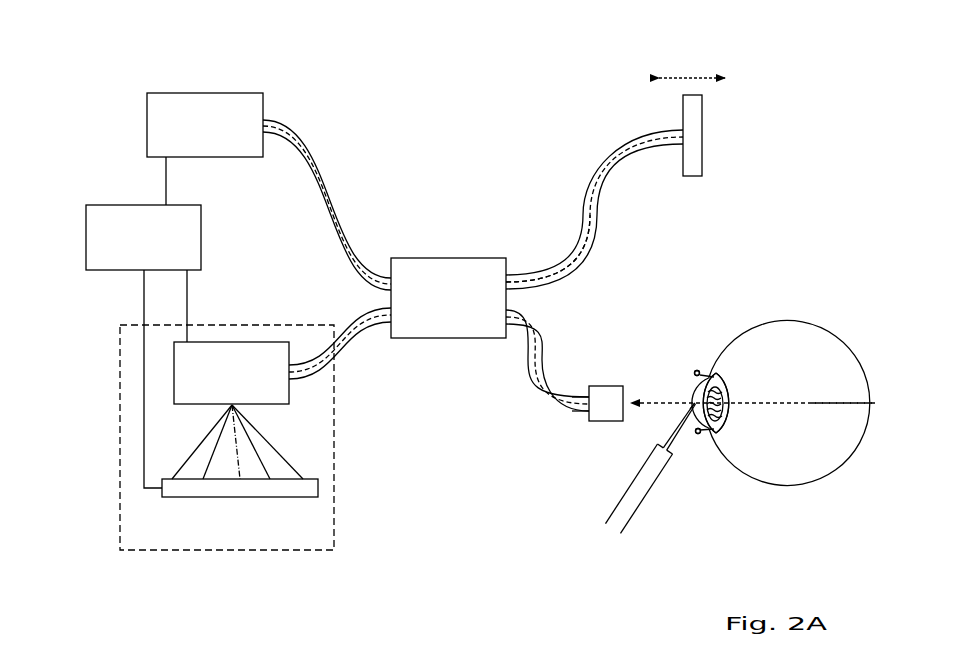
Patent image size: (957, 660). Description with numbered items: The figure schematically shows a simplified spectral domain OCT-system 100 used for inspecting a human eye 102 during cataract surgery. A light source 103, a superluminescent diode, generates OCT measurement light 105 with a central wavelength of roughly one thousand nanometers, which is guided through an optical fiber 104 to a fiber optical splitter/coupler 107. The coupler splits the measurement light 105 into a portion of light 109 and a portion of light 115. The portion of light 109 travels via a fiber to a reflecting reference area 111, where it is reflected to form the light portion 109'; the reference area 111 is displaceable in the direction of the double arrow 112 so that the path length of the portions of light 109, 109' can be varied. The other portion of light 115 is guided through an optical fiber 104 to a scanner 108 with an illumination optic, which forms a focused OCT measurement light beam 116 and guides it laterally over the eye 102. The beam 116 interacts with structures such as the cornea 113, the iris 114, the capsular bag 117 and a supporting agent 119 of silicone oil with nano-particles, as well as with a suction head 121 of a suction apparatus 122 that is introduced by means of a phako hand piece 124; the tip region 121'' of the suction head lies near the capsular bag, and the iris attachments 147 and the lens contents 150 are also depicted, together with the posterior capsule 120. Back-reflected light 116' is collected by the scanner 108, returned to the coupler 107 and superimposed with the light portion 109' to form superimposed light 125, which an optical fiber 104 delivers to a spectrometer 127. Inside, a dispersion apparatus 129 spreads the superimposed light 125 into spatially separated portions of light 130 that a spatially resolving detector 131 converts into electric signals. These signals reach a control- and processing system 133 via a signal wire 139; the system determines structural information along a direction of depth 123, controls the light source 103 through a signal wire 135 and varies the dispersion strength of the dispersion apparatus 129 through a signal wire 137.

The OCT-system 100 is at (90, 105).
The human eye 102 is at (787, 304).
The light source 103 is at (200, 92).
The optical fiber 104 is at (286, 118).
The OCT measurement light 105 is at (335, 181).
The fiber optical splitter/coupler 107 is at (445, 257).
The scanner 108 is at (600, 385).
The portion of light 109 is at (594, 209).
The light portion 109' is at (548, 248).
The reflecting reference area 111 is at (703, 155).
The double arrow 112 is at (693, 75).
The cornea 113 is at (694, 368).
The iris 114 is at (703, 373).
The portion of light 115 is at (572, 398).
The OCT measurement light beam 116 is at (753, 378).
The light 116' is at (549, 359).
The capsular bag 117 is at (726, 382).
The supporting agent 119 is at (735, 412).
The lens capsule 120 is at (727, 421).
The suction head 121 is at (651, 426).
The needle tip 121'' is at (662, 368).
The suction apparatus 122 is at (698, 508).
The direction of depth 123 is at (812, 402).
The phako hand piece 124 is at (641, 510).
The superimposed light 125 is at (350, 333).
The spectrometer 127 is at (335, 513).
The dispersion apparatus 129 is at (224, 381).
The portions of light 130 is at (212, 458).
The spatially resolving detector 131 is at (218, 498).
The control- and processing system 133 is at (86, 240).
The signal wire 135 is at (167, 186).
The signal wire 137 is at (188, 305).
The signal wire 139 is at (144, 300).
The zonules 147 is at (697, 370).
The cataract 150 is at (726, 400).